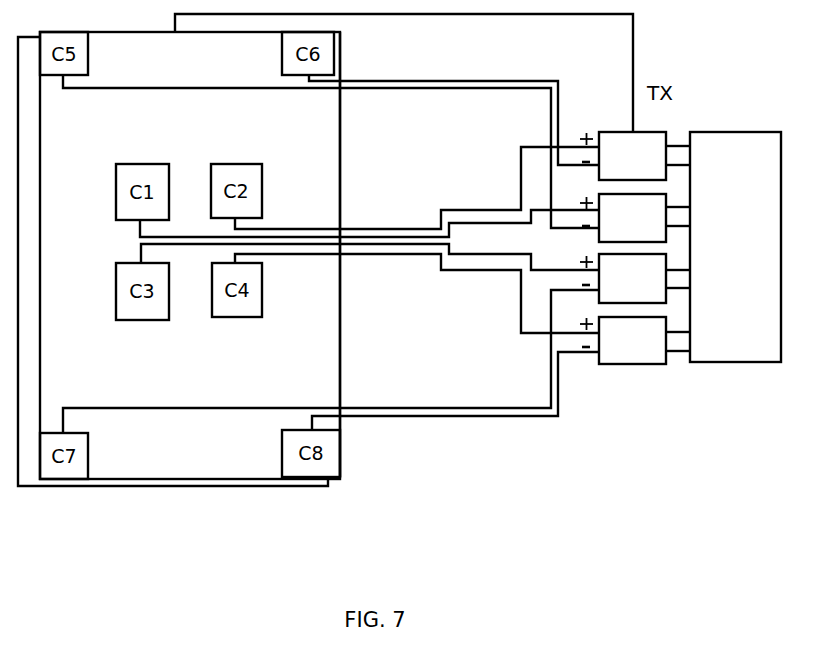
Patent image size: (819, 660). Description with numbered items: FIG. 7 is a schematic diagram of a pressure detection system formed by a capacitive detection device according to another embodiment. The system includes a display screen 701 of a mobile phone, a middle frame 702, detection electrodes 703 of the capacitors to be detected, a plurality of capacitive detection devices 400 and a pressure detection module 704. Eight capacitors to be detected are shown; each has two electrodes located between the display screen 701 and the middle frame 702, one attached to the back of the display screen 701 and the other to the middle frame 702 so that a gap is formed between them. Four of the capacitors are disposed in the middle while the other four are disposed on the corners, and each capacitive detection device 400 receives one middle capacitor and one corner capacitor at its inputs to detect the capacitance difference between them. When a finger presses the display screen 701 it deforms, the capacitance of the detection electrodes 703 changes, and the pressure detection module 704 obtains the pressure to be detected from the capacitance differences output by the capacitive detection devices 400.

The display screen 701 is at (223, 487).
The middle frame 702 is at (340, 420).
The detection electrodes 703 is at (26, 467).
The pressure detection module 704 is at (735, 247).
The capacitive detection device 400 is at (635, 248).